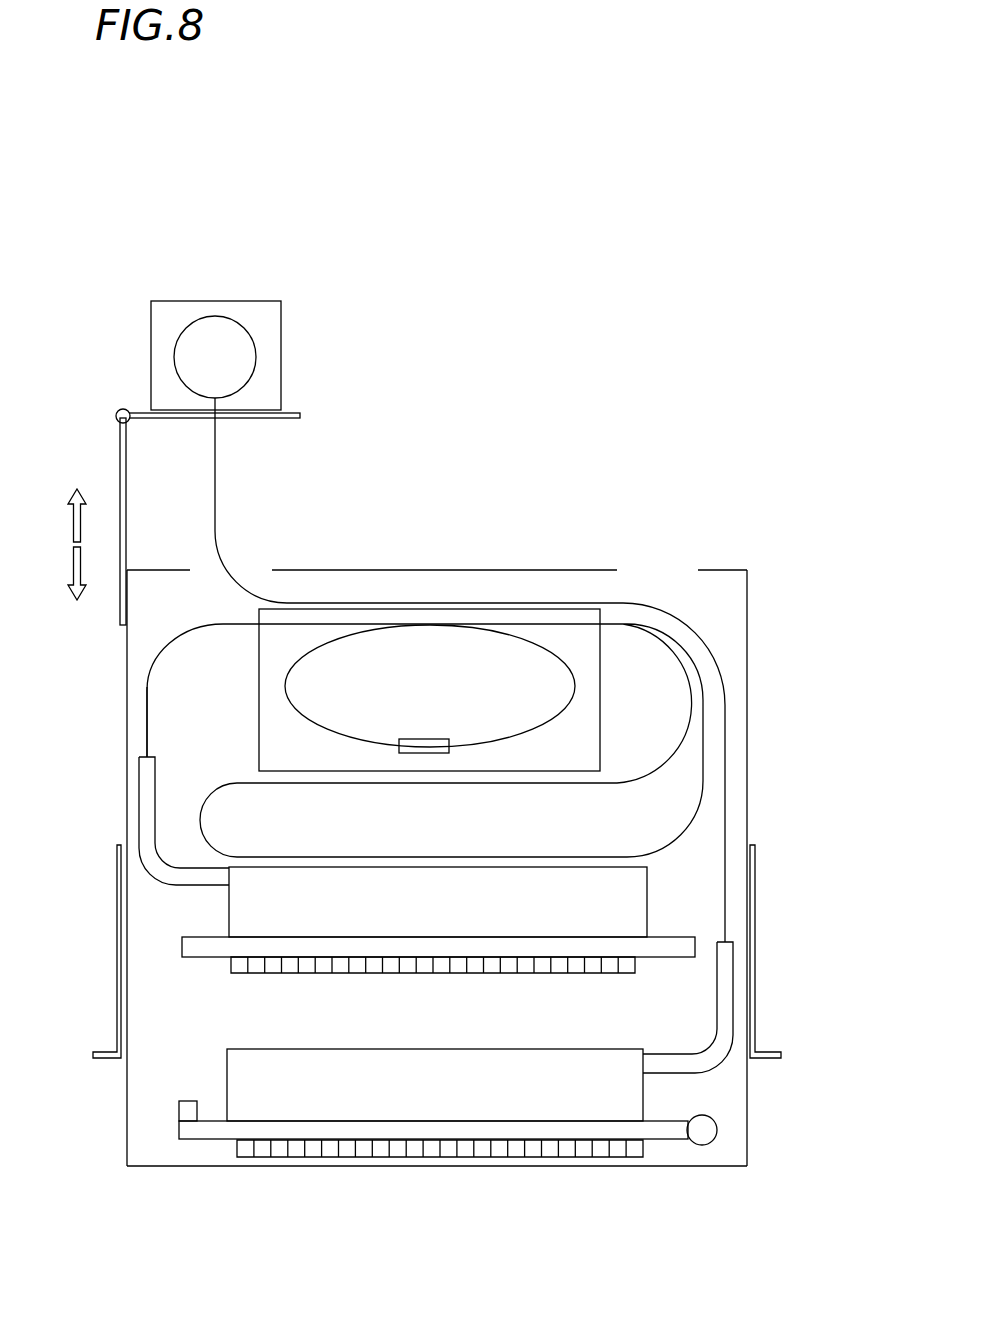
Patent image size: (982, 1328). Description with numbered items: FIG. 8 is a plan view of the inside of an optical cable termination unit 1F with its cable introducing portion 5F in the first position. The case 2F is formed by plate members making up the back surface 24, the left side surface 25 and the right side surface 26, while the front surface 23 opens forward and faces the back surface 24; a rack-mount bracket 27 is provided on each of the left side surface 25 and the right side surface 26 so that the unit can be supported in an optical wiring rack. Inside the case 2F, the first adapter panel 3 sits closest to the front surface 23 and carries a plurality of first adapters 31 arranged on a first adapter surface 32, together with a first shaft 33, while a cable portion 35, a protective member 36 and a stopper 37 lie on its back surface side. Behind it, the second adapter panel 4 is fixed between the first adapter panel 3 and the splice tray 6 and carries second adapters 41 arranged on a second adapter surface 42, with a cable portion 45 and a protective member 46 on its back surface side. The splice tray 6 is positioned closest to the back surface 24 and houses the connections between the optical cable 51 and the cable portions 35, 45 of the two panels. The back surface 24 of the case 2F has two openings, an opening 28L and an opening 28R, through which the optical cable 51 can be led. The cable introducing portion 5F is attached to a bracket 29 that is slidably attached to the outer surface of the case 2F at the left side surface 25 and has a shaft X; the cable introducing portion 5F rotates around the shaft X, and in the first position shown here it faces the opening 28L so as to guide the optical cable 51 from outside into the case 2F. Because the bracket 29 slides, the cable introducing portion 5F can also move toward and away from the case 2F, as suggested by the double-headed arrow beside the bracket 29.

The termination unit 1F is at (697, 326).
The case 2F is at (757, 563).
The first adapter panel 3 is at (654, 1102).
The second adapter panel 4 is at (201, 907).
The cable introducing portion 5F is at (217, 305).
The splice tray 6 is at (601, 703).
The front surface 23 is at (184, 1168).
The back surface 24 is at (458, 578).
The left side surface 25 is at (126, 727).
The right side surface 26 is at (748, 712).
The rack-mount bracket 27 is at (115, 1052).
The opening 28L is at (256, 562).
The opening 28R is at (660, 572).
The bracket 29 is at (120, 462).
The first adapters 31 is at (597, 1158).
The first adapter surface 32 is at (677, 1141).
The first shaft 33 is at (702, 1146).
The cable portion 35 is at (725, 879).
The protective member 36 is at (716, 1012).
The stopper 37 is at (189, 1101).
The second adapters 41 is at (268, 974).
The second adapter surface 42 is at (206, 958).
The cable portion 45 is at (147, 712).
The protective member 46 is at (155, 823).
The optical cable 51 is at (528, 603).
The shaft X is at (117, 410).